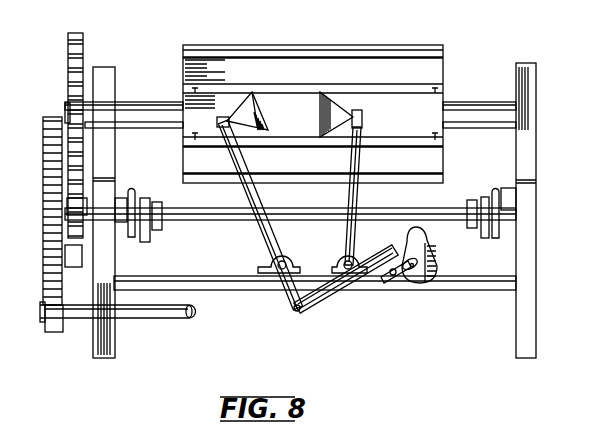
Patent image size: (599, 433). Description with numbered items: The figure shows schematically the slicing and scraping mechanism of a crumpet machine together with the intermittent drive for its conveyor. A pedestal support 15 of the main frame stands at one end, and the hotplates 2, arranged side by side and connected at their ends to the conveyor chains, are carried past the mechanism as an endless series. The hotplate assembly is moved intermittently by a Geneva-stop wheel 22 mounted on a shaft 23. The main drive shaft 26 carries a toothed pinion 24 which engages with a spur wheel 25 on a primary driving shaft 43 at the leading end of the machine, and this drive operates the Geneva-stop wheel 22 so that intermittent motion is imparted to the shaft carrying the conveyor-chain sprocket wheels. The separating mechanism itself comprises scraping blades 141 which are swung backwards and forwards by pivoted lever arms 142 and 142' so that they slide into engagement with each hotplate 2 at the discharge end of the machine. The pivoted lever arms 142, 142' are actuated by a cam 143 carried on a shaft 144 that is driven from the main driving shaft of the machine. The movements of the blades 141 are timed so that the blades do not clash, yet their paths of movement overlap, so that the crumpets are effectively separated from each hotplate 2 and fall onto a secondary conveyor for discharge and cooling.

The hotplate 2 is at (425, 73).
The pedestal support 15 is at (527, 157).
The Geneva-stop wheel 22 is at (84, 50).
The shaft 23 is at (500, 115).
The toothed pinion 24 is at (55, 333).
The spur wheel 25 is at (57, 241).
The main drive shaft 26 is at (177, 318).
The primary driving shaft 43 is at (210, 223).
The scraping blade 141 is at (323, 117).
The pivoted lever arm 142 is at (251, 213).
The pivoted lever arm 142' is at (380, 196).
The cam 143 is at (427, 238).
The shaft 144 is at (432, 257).